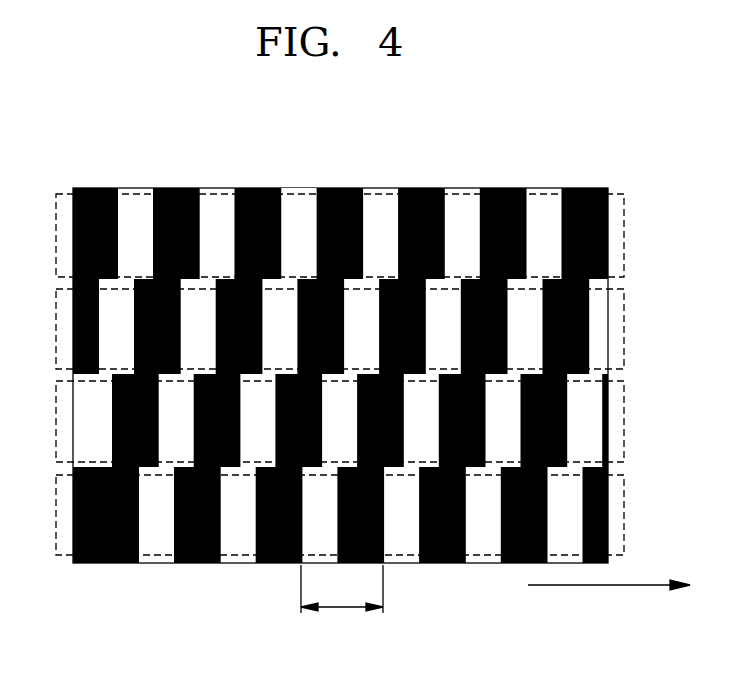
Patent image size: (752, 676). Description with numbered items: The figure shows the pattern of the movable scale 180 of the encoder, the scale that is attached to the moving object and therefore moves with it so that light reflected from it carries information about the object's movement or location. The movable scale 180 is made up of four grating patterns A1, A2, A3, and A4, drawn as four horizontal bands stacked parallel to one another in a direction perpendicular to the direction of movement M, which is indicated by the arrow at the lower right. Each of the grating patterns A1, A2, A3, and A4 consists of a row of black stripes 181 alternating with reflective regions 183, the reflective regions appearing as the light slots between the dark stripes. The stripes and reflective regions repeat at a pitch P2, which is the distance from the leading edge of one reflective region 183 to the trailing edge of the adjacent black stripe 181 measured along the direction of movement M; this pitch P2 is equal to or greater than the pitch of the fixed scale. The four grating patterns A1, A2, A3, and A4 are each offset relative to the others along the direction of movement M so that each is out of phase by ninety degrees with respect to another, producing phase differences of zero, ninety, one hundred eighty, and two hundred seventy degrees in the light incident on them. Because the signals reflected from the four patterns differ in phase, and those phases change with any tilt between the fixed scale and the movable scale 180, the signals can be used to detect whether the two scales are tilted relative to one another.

The movable scale 180 is at (561, 179).
The black stripes 181 is at (243, 180).
The reflective regions 183 is at (298, 180).
The first grating pattern A1 is at (617, 228).
The second grating pattern A2 is at (617, 322).
The third grating pattern A3 is at (617, 415).
The fourth grating pattern A4 is at (617, 508).
The pitch P2 is at (342, 589).
The direction of movement M is at (599, 577).